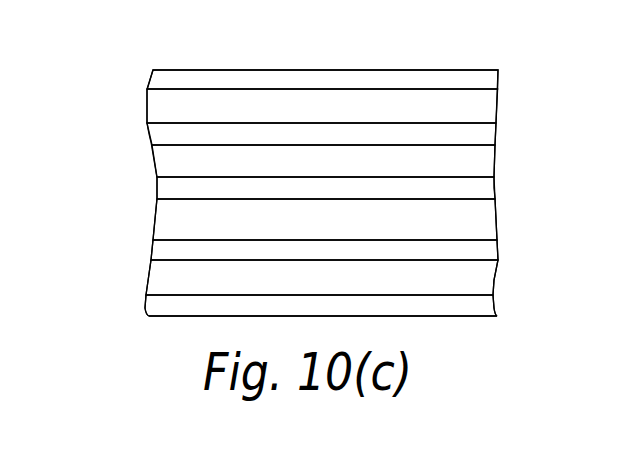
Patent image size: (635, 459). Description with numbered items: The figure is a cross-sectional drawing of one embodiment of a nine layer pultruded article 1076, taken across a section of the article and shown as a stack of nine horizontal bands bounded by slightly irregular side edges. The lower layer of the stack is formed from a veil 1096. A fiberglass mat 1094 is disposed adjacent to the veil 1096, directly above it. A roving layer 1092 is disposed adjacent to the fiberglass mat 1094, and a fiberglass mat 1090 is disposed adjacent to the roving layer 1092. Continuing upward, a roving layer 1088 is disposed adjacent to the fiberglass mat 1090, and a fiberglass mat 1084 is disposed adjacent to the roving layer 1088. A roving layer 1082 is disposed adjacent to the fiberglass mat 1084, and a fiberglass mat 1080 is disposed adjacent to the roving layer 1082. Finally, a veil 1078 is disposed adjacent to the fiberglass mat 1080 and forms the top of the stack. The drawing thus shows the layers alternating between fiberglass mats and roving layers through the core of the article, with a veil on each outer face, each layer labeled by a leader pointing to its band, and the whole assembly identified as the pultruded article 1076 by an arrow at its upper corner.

The nine layer pultruded article 1076 is at (500, 67).
The veil 1078 is at (152, 87).
The fiberglass mat 1080 is at (147, 102).
The roving layer 1082 is at (152, 132).
The fiberglass mat 1084 is at (157, 162).
The roving layer 1088 is at (157, 183).
The fiberglass mat 1090 is at (155, 222).
The roving layer 1092 is at (152, 250).
The fiberglass mat 1094 is at (148, 270).
The veil 1096 is at (147, 310).